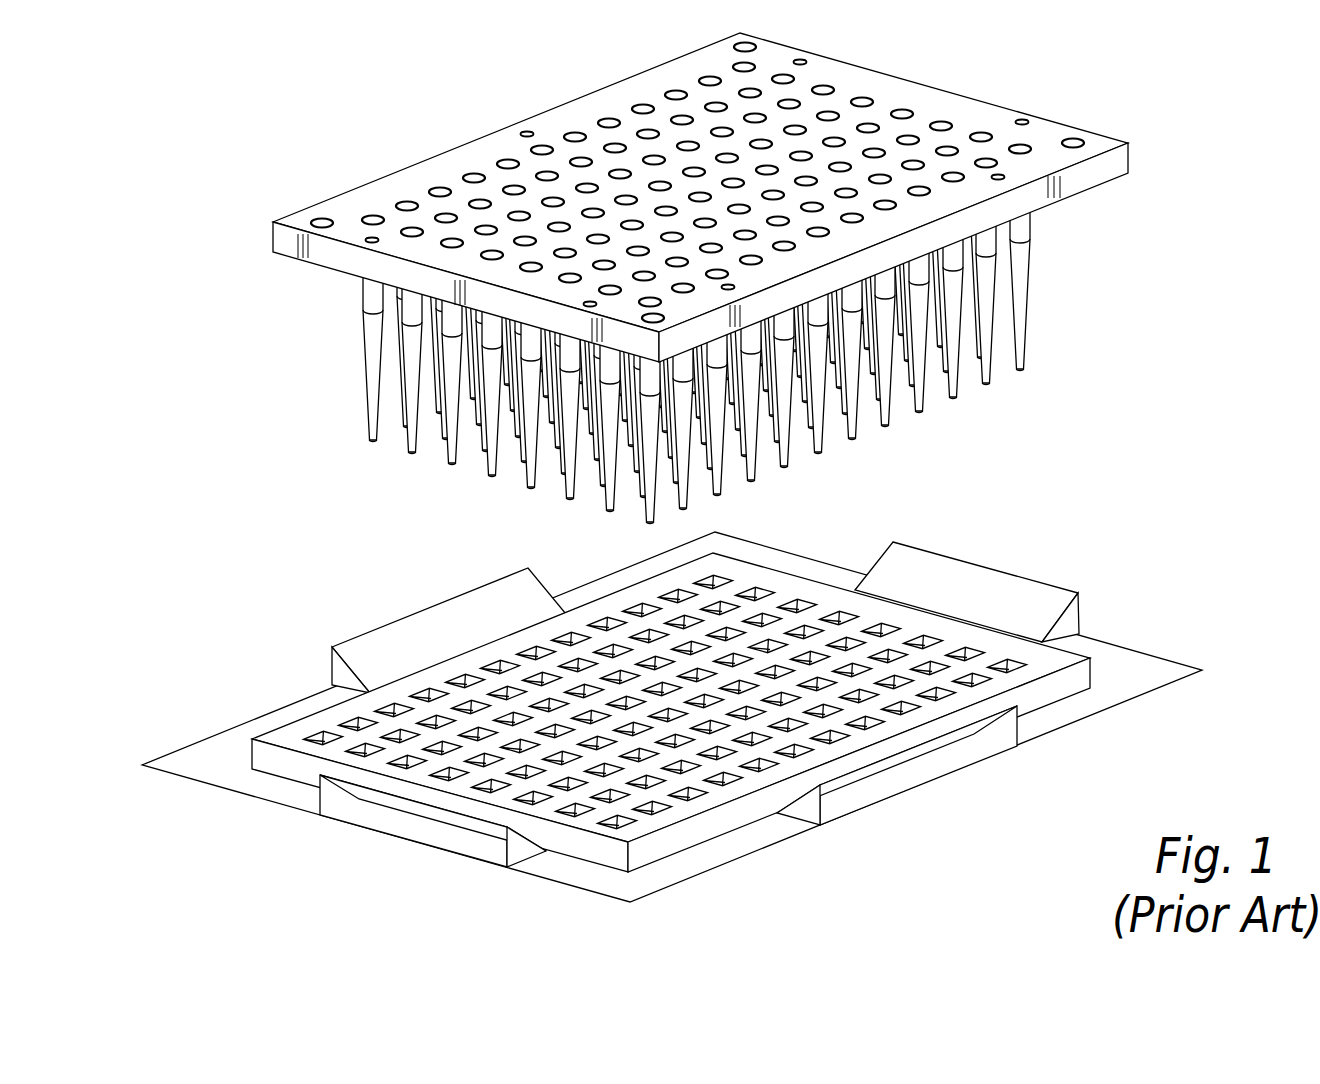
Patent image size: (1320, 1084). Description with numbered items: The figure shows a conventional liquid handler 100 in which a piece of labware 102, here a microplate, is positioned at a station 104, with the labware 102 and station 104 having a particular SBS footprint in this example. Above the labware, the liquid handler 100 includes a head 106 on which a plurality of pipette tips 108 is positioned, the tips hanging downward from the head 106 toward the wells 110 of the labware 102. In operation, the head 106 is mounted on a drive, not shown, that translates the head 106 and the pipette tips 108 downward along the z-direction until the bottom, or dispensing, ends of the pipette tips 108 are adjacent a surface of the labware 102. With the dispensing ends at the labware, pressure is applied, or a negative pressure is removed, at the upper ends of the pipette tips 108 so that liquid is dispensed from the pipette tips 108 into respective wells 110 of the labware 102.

The liquid handler 100 is at (130, 234).
The labware 102 is at (1058, 662).
The station 104 is at (1170, 667).
The head 106 is at (1008, 110).
The pipette tips 108 is at (1024, 382).
The wells 110 is at (352, 722).